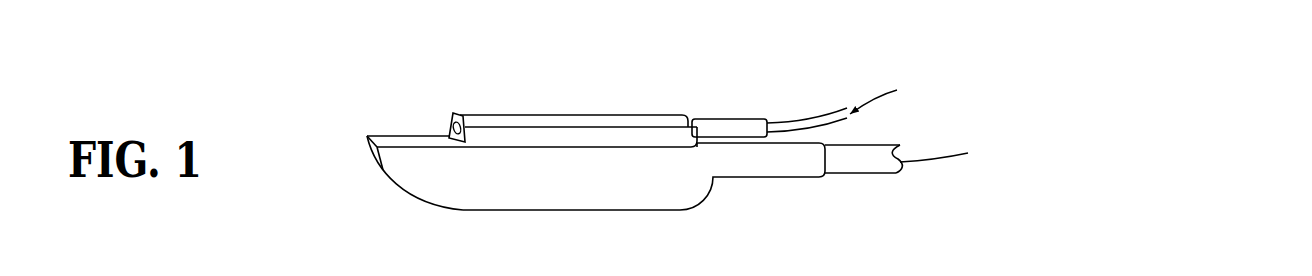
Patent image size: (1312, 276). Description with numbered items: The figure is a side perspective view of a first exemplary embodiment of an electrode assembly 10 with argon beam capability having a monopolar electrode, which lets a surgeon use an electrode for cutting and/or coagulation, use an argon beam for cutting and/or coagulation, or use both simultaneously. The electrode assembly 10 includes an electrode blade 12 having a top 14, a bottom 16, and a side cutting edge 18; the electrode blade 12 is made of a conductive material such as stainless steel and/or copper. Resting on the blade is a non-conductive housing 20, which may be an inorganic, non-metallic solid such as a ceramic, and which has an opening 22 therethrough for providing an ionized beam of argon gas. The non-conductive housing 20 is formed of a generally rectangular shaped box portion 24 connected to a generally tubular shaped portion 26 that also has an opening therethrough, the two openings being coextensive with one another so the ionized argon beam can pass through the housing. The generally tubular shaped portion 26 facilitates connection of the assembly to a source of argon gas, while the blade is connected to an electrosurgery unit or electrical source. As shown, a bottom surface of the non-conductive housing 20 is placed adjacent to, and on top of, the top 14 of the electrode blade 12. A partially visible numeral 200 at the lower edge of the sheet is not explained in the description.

The electrode assembly 10 is at (827, 77).
The electrode blade 12 is at (671, 185).
The top 14 is at (383, 136).
The bottom 16 is at (507, 211).
The side cutting edge 18 is at (377, 173).
The non-conductive housing 20 is at (665, 113).
The opening 22 is at (458, 120).
The generally rectangular shaped box portion 24 is at (537, 133).
The generally tubular shaped portion 26 is at (742, 118).
The reference numeral (partially shown) 200 is at (939, 272).